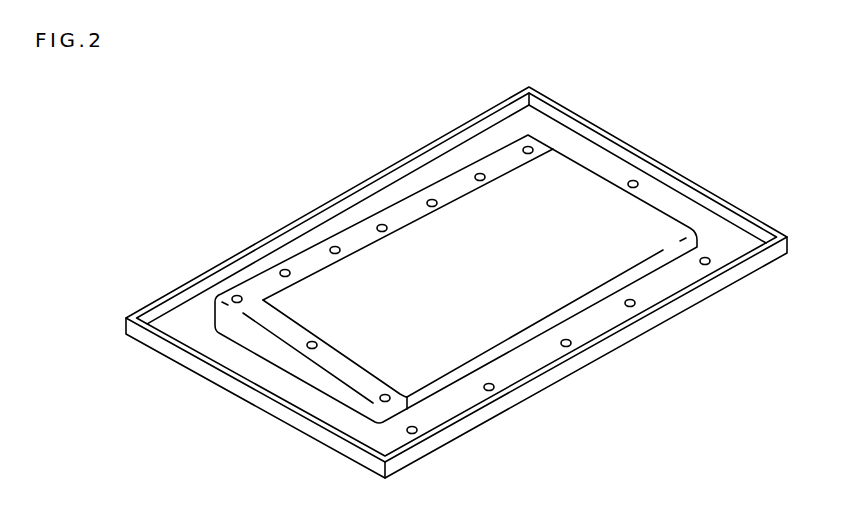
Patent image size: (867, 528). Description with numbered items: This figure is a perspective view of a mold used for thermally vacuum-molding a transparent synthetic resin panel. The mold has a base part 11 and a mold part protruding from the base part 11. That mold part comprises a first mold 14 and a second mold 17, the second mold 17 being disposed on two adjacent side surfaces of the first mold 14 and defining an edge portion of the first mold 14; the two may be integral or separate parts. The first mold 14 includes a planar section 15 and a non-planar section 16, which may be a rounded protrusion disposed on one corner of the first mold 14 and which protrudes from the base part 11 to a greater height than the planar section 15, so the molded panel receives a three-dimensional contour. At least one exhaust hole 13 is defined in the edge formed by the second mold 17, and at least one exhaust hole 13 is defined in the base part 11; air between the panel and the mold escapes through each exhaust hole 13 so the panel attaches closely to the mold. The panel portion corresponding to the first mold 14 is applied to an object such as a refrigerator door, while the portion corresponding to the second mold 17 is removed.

The base part 11 is at (713, 227).
The exhaust hole 13 is at (712, 256).
The first mold 14 is at (456, 263).
The planar section 15 is at (420, 240).
The non-planar section 16 is at (312, 290).
The second mold 17 is at (450, 198).